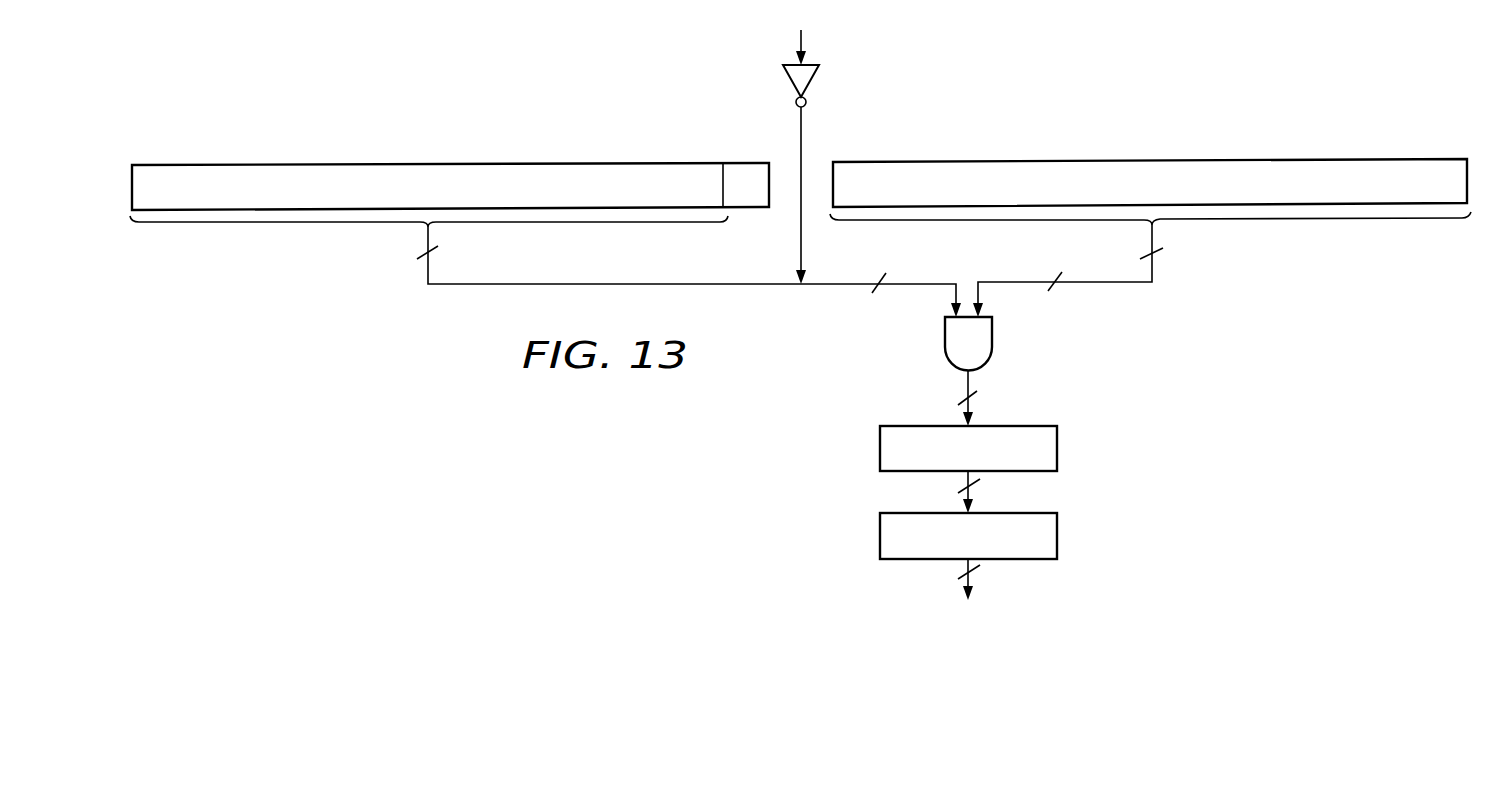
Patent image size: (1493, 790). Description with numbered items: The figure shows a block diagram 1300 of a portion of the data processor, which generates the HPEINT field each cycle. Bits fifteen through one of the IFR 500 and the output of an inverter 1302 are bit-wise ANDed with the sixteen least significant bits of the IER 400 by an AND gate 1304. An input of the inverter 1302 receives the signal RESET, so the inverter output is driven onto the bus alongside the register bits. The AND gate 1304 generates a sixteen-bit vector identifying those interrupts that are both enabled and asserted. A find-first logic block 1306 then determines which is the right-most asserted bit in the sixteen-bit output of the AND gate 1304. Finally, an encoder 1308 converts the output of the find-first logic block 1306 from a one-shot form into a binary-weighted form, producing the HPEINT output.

The block diagram 1300 is at (404, 96).
The IFR 500 is at (449, 181).
The IER 400 is at (1150, 177).
The inverter 1302 is at (790, 76).
The AND gate 1304 is at (993, 343).
The find-first logic block 1306 is at (880, 449).
The encoder 1308 is at (880, 538).